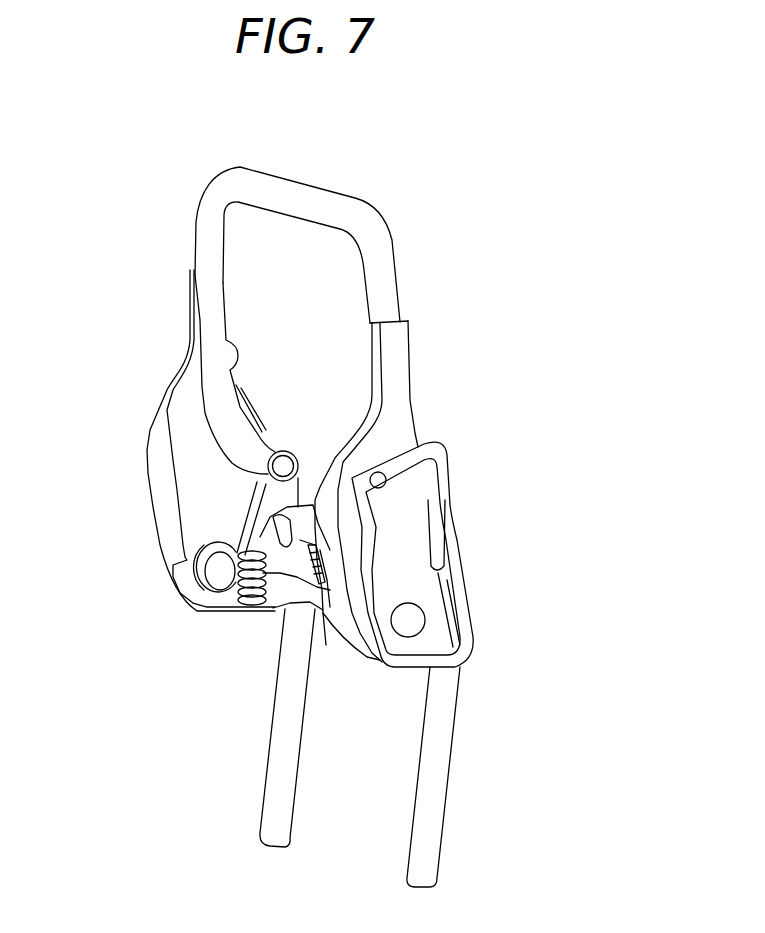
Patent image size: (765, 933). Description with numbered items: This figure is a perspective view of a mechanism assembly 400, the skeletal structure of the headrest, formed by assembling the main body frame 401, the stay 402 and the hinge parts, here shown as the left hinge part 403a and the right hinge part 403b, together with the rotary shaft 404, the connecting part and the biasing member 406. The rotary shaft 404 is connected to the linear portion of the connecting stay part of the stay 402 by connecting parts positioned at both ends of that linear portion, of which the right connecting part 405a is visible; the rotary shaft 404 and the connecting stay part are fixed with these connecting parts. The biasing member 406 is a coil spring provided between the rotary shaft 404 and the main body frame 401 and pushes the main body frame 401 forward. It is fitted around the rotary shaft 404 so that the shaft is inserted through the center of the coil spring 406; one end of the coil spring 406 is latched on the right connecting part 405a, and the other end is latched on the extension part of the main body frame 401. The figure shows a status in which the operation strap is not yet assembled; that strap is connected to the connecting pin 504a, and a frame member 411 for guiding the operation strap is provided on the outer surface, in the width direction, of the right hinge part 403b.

The mechanism assembly 400 is at (434, 211).
The main body frame 401 is at (303, 187).
The stay 402 is at (272, 740).
The left hinge part 403a is at (150, 426).
The right hinge part 403b is at (417, 438).
The rotary shaft 404 is at (326, 645).
The right connecting part 405a is at (297, 450).
The biasing member 406 is at (240, 525).
The frame member 411 is at (463, 640).
The connecting pin 504a is at (387, 481).